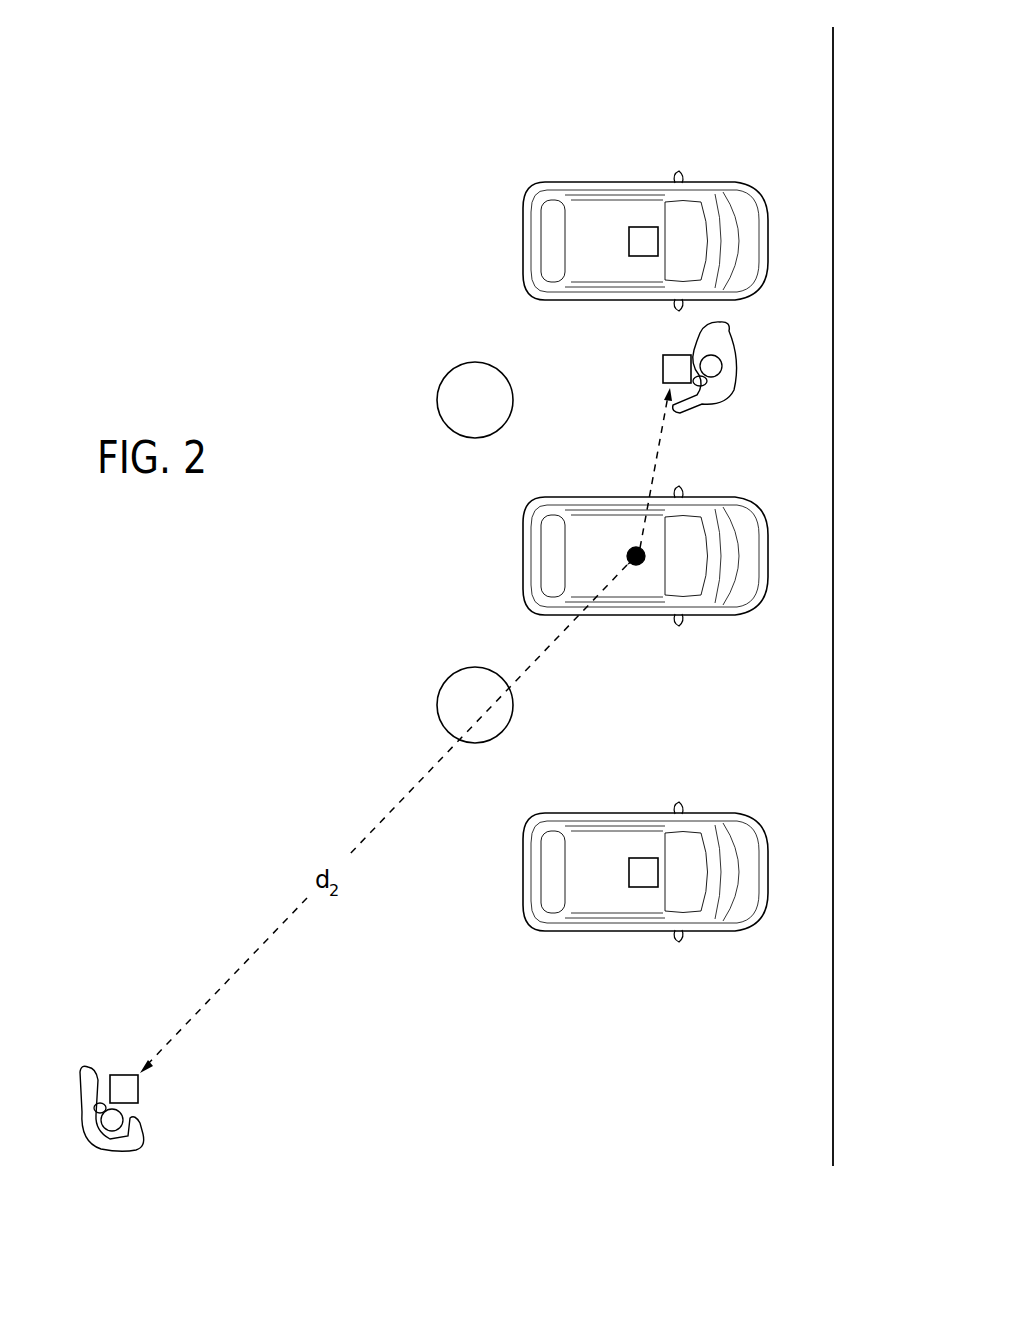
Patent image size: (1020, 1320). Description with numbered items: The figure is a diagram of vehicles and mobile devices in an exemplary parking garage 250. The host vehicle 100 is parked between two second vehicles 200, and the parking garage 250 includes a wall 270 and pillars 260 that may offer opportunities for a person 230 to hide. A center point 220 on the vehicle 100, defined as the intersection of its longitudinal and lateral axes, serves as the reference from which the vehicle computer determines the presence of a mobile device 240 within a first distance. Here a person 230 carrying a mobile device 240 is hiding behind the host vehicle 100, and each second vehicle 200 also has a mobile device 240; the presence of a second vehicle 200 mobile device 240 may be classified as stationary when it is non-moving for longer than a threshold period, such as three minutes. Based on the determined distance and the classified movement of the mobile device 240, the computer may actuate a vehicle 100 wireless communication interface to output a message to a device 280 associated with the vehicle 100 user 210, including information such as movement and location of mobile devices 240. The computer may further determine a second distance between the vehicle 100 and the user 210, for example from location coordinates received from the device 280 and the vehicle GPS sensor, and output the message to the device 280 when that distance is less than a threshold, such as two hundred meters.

The vehicle 100 is at (523, 552).
The second vehicle 200 is at (523, 232).
The vehicle user 210 is at (108, 1150).
The center point 220 is at (630, 548).
The person 230 is at (730, 352).
The mobile device 240 is at (638, 227).
The parking garage 250 is at (193, 155).
The pillar 260 is at (437, 396).
The wall 270 is at (831, 96).
The device 280 is at (140, 1094).